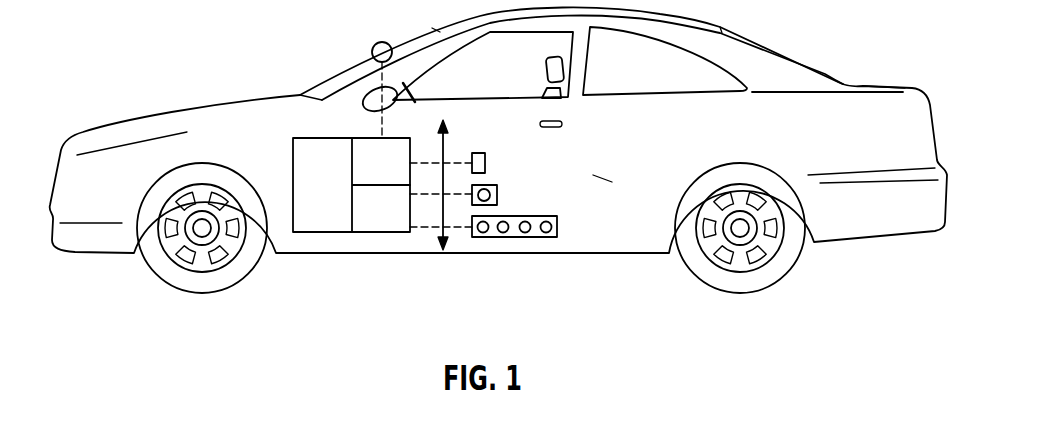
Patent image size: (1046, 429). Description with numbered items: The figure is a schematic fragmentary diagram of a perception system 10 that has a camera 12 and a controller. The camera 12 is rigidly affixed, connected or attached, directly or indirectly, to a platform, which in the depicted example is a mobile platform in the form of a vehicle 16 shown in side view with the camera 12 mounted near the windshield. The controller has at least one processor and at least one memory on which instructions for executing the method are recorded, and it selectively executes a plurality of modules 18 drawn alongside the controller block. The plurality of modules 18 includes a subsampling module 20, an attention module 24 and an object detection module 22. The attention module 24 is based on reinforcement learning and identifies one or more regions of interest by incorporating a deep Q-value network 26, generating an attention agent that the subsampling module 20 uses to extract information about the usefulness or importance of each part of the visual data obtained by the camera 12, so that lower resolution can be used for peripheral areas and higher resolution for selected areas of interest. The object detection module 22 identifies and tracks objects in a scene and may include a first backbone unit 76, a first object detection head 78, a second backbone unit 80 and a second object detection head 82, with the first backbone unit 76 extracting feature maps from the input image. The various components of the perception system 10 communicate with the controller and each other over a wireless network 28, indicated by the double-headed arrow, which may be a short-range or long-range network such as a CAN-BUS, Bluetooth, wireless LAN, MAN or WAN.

The perception system 10 is at (153, 107).
The camera 12 is at (376, 44).
The vehicle 16 is at (863, 82).
The plurality of modules 18 is at (612, 178).
The subsampling module 20 is at (486, 163).
The object detection module 22 is at (558, 226).
The attention module 24 is at (499, 202).
The deep Q-value network 26 is at (500, 194).
The wireless network 28 is at (437, 227).
The first backbone unit 76 is at (482, 236).
The first object detection head 78 is at (504, 236).
The second backbone unit 80 is at (525, 236).
The second object detection head 82 is at (548, 236).